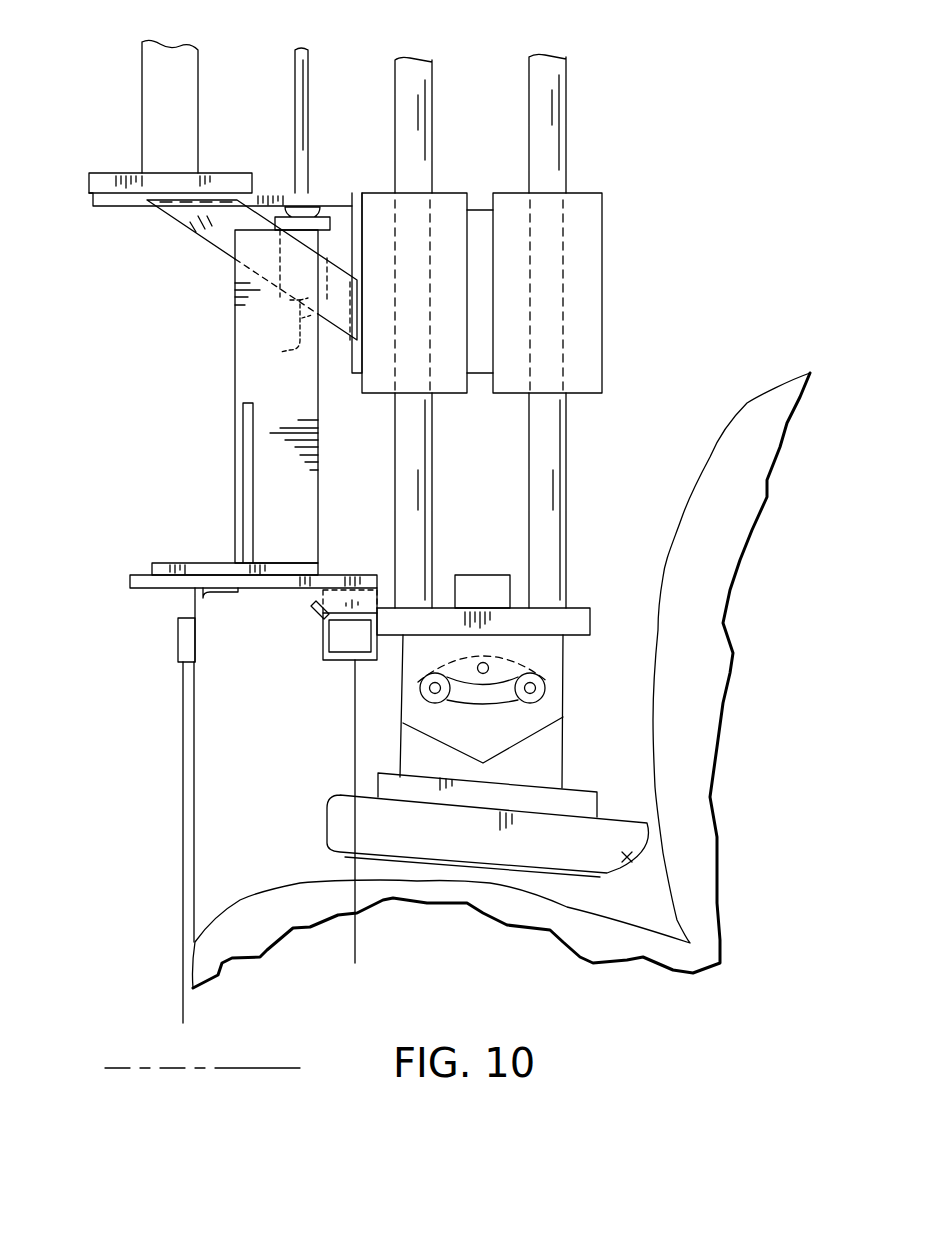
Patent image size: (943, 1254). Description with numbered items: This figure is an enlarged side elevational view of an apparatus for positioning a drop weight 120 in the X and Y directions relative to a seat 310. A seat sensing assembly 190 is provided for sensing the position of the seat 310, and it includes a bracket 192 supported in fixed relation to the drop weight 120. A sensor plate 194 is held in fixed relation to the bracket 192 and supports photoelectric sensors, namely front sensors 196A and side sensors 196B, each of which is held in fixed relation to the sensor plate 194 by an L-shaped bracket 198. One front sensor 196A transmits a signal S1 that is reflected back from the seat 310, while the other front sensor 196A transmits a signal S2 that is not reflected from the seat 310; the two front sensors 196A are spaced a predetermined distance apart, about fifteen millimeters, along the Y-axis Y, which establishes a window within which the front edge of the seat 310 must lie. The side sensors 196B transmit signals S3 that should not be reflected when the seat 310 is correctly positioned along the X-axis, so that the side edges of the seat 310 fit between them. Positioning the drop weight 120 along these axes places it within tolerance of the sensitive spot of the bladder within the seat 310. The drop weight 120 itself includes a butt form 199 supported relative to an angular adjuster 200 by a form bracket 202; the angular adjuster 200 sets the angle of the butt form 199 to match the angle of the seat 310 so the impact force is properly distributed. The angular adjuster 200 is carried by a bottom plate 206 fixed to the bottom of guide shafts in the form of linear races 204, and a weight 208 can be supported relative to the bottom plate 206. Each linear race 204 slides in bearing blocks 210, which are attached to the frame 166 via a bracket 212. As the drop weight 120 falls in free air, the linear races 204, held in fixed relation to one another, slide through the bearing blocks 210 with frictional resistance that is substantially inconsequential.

The drop weight 120 is at (652, 150).
The frame 166 is at (142, 117).
The seat sensing assembly 190 is at (146, 734).
The bracket 192 is at (238, 383).
The sensor plate 194 is at (360, 575).
The front sensor 196A is at (183, 642).
The side sensor 196B is at (345, 650).
The L-shaped bracket 198 is at (195, 603).
The butt form 199 is at (627, 860).
The angular adjuster 200 is at (520, 668).
The form bracket 202 is at (570, 800).
The linear race 204 is at (423, 447).
The bottom plate 206 is at (578, 615).
The weight 208 is at (485, 578).
The bearing block 210 is at (583, 288).
The bracket 212 is at (220, 266).
The seat 310 is at (747, 398).
The signal S1 is at (193, 883).
The signal S2 is at (183, 955).
The signal S3 is at (360, 953).
The Y-axis Y is at (260, 1068).